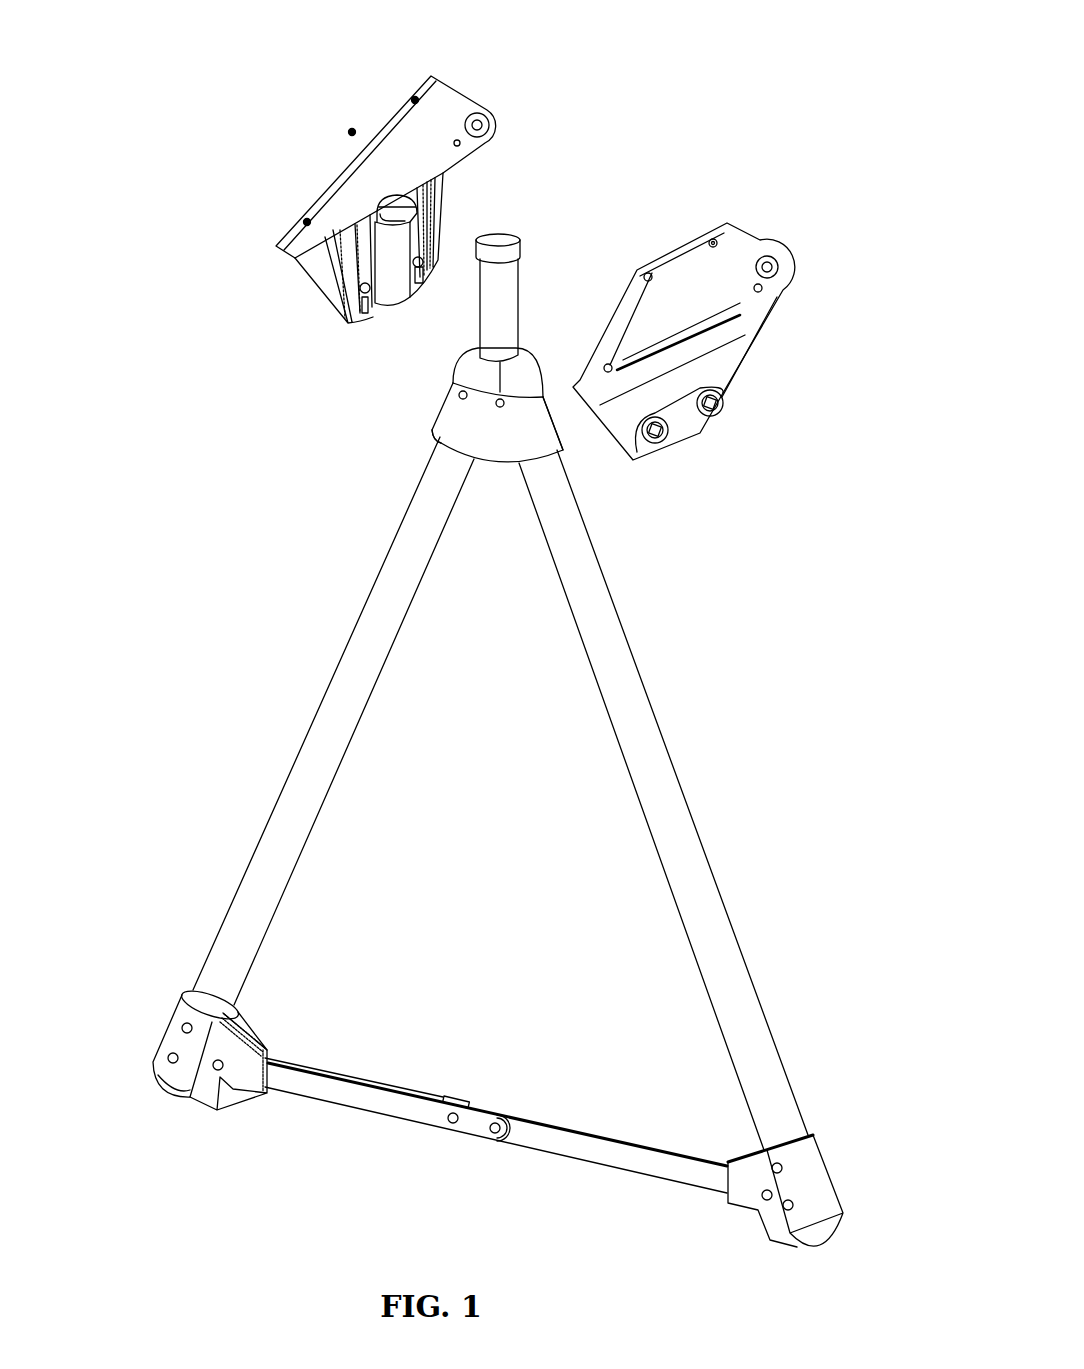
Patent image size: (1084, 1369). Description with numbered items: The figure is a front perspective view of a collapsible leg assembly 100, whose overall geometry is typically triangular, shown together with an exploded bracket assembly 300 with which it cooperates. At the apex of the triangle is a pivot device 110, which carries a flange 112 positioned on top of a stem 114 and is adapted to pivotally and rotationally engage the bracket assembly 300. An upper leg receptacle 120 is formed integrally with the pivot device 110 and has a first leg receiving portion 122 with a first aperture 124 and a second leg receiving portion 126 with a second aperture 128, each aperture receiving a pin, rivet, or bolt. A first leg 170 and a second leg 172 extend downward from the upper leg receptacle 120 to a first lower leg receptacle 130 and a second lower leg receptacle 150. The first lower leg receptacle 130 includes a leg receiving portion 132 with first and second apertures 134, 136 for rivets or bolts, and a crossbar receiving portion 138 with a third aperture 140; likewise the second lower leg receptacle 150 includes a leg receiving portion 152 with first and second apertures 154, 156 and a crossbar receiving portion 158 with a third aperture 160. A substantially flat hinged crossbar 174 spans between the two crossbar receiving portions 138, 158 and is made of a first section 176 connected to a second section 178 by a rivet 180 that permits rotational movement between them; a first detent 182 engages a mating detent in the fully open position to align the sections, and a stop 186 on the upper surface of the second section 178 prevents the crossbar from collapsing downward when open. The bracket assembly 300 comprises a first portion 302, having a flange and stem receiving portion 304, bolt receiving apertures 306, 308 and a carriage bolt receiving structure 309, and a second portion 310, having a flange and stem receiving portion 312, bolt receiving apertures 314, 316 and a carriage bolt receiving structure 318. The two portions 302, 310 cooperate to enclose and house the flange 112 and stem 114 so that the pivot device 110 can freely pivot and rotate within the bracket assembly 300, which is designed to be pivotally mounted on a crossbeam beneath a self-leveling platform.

The collapsible leg assembly 100 is at (298, 677).
The pivot device 110 is at (450, 329).
The flange 112 is at (521, 245).
The stem 114 is at (520, 313).
The upper leg receptacle 120 is at (450, 361).
The first leg receiving portion 122 is at (437, 418).
The first aperture 124 is at (461, 405).
The second leg receiving portion 126 is at (556, 430).
The second aperture 128 is at (500, 408).
The first lower leg receptacle 130 is at (162, 1105).
The leg receiving portion 132 is at (182, 1012).
The first aperture 134 is at (182, 1028).
The second aperture 136 is at (168, 1059).
The crossbar receiving portion 138 is at (258, 1042).
The third aperture 140 is at (220, 1071).
The second lower leg receptacle 150 is at (821, 1266).
The leg receiving portion 152 is at (827, 1165).
The first aperture 154 is at (778, 1163).
The second aperture 156 is at (795, 1206).
The crossbar receiving portion 158 is at (762, 1212).
The third aperture 160 is at (763, 1193).
The first leg 170 is at (243, 858).
The second leg 172 is at (696, 797).
The hinged crossbar 174 is at (611, 1115).
The first section 176 is at (323, 1101).
The second section 178 is at (620, 1169).
The rivet 180 is at (495, 1134).
The first detent 182 is at (453, 1124).
The stop 186 is at (457, 1096).
The bracket assembly 300 is at (350, 60).
The first portion 302 is at (355, 118).
The flange and stem receiving portion 304 is at (397, 194).
The bolt receiving aperture 306 is at (343, 318).
The bolt receiving aperture 308 is at (448, 212).
The carriage bolt receiving structure 309 is at (478, 112).
The second portion 310 is at (752, 228).
The flange and stem receiving portion 312 is at (668, 450).
The bolt receiving aperture 314 is at (652, 462).
The bolt receiving aperture 316 is at (720, 404).
The carriage bolt receiving structure 318 is at (778, 262).